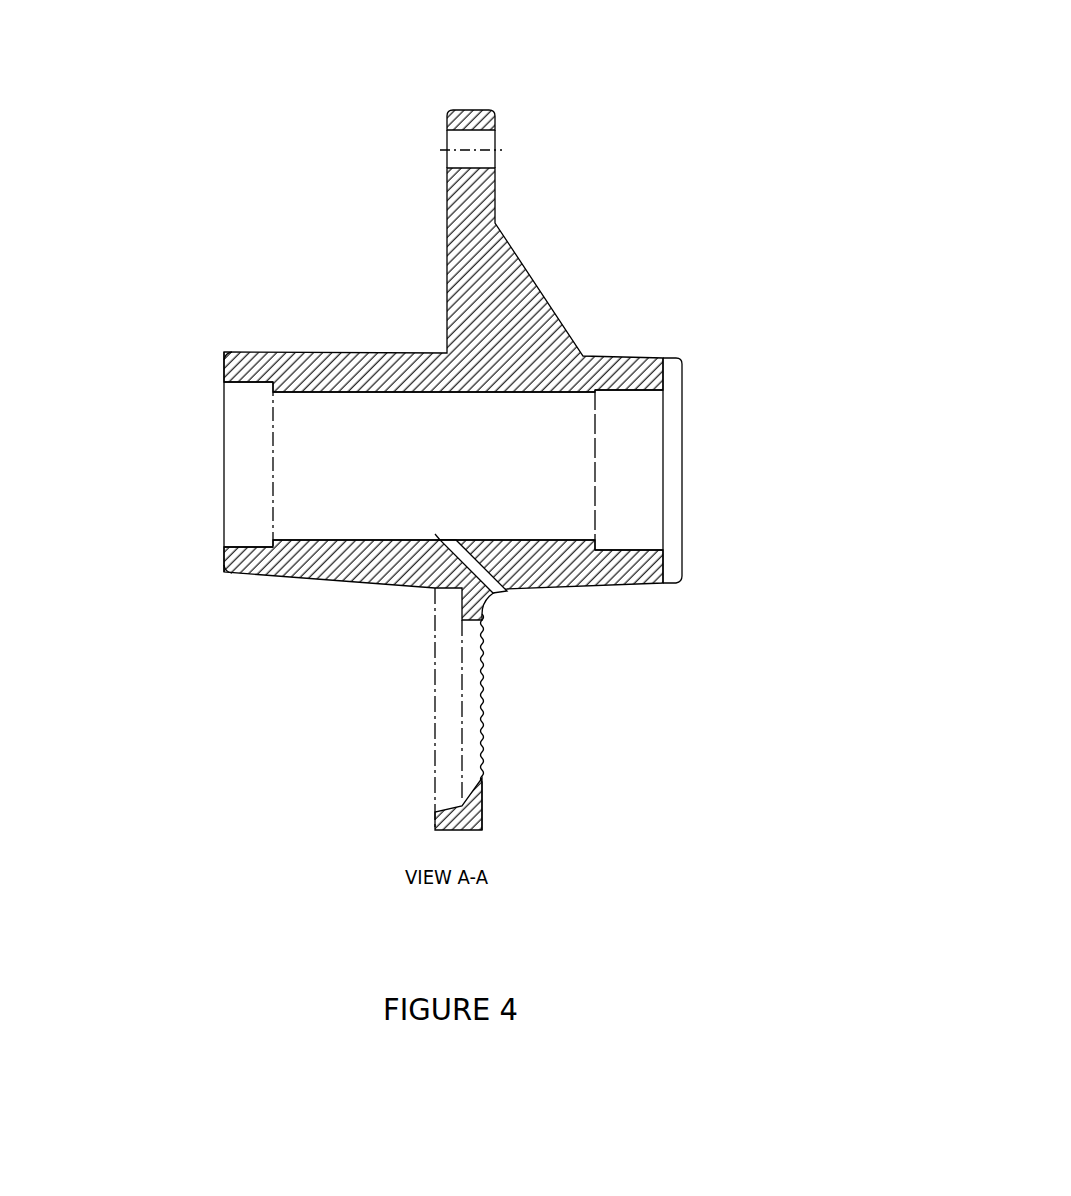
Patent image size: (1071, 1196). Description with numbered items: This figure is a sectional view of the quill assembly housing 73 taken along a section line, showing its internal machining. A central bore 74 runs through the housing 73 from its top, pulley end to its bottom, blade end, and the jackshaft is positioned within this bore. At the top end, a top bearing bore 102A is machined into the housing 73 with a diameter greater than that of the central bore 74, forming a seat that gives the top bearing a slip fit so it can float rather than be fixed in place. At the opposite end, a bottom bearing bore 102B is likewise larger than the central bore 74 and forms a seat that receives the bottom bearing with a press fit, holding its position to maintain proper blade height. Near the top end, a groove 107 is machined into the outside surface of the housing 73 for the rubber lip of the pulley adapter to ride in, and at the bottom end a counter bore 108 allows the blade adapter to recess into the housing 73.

The housing 73 is at (632, 125).
The central bore 74 is at (500, 483).
The top bearing bore 102A is at (158, 464).
The bottom bearing bore 102B is at (752, 470).
The groove 107 is at (236, 350).
The counter bore 108 is at (794, 475).